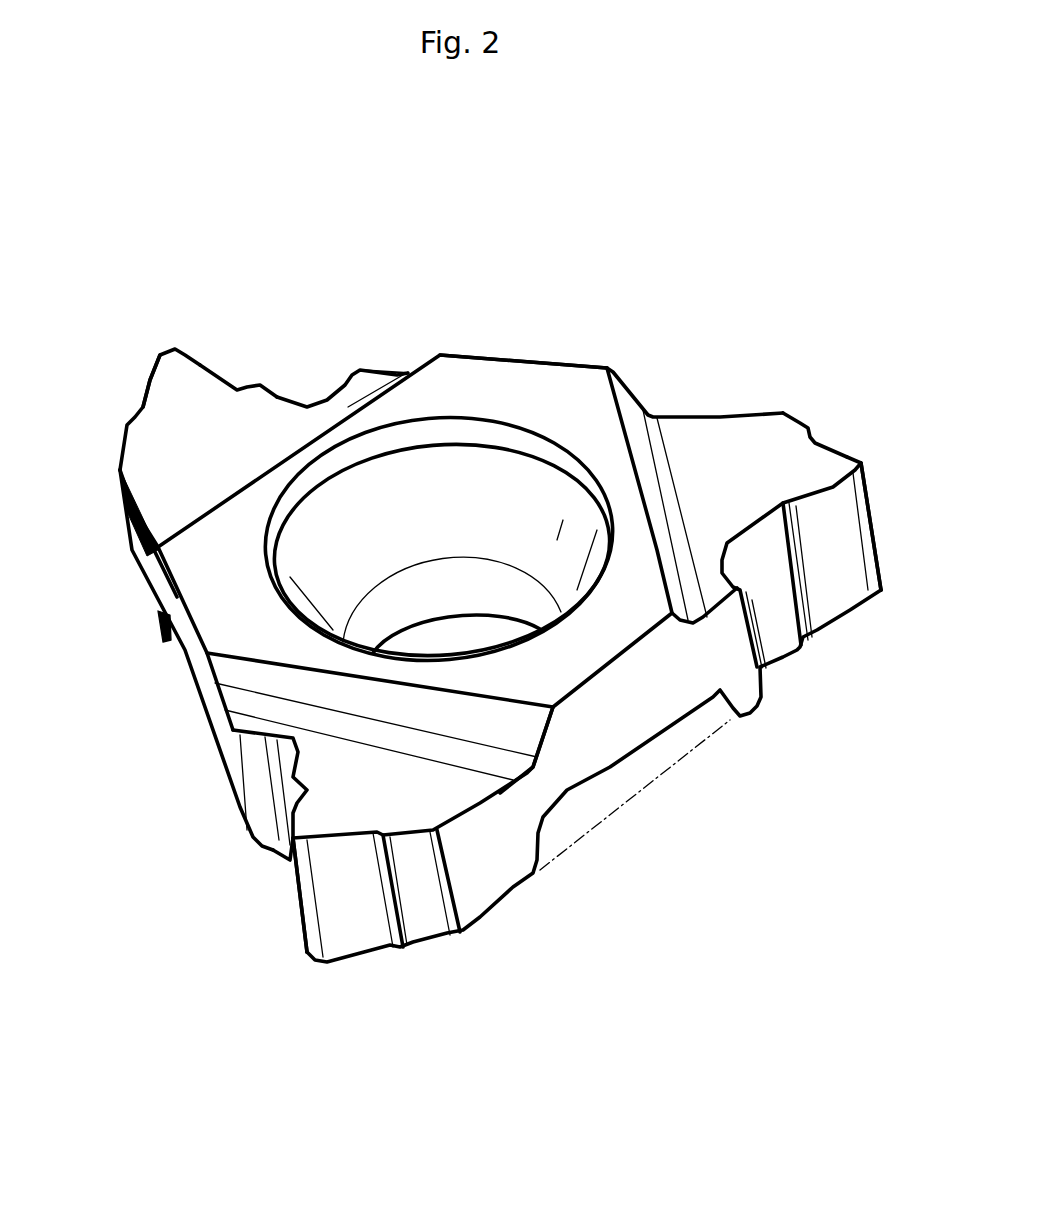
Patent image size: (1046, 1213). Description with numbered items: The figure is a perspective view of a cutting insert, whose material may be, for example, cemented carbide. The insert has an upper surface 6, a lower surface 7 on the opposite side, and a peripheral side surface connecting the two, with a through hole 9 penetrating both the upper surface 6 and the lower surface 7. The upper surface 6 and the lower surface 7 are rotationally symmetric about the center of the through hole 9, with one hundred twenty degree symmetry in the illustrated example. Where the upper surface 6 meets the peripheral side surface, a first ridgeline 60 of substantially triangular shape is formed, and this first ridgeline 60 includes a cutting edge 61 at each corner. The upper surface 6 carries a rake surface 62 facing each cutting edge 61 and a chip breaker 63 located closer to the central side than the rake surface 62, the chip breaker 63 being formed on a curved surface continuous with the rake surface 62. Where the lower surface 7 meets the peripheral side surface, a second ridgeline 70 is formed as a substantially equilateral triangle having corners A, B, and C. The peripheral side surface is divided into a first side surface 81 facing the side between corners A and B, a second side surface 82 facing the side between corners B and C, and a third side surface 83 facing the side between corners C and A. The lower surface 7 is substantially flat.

The upper surface 6 is at (213, 553).
The first ridgeline 60 is at (177, 597).
The cutting edge 61 is at (175, 355).
The rake surface 62 is at (200, 378).
The chip breaker 63 is at (307, 437).
The lower surface 7 is at (473, 926).
The second ridgeline 70 is at (500, 900).
The first side surface 81 is at (200, 653).
The second side surface 82 is at (623, 723).
The third side surface 83 is at (527, 360).
The through hole 9 is at (462, 513).
The corner A is at (152, 378).
The corner B is at (882, 594).
The corner C is at (370, 957).